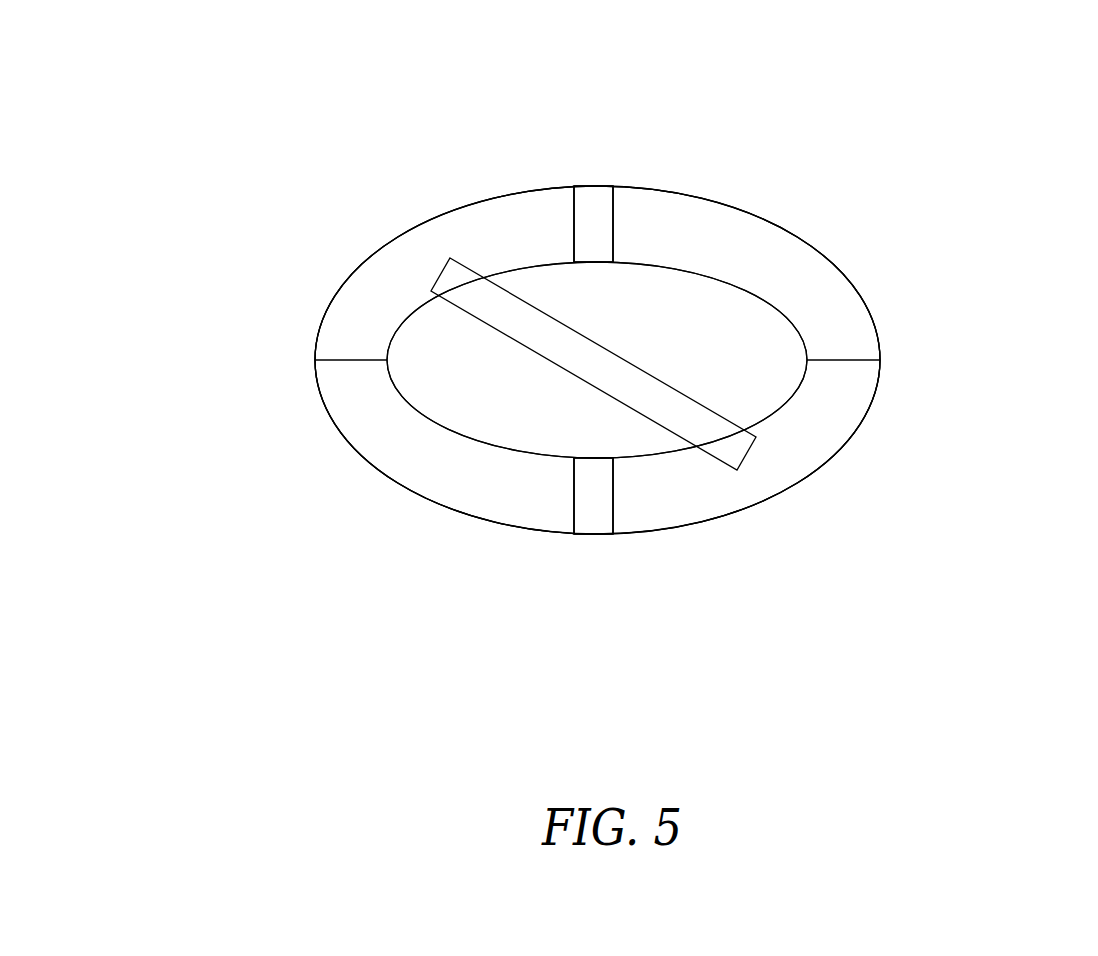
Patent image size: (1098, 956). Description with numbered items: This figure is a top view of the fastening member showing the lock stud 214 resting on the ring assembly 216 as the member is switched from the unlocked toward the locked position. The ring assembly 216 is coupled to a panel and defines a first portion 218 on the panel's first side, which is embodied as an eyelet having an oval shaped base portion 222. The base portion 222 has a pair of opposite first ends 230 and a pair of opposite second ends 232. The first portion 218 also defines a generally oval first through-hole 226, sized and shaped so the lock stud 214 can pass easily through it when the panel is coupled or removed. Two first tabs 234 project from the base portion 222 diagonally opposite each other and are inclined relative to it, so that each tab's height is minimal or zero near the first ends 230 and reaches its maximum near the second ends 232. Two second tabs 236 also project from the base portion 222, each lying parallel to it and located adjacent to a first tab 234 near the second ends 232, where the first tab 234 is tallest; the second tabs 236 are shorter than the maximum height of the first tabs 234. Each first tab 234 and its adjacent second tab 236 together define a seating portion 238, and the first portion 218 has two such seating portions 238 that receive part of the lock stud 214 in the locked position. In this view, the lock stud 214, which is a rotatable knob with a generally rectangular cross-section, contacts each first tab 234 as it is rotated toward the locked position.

The lock stud 214 is at (467, 293).
The ring assembly 216 is at (840, 150).
The first portion 218 is at (290, 315).
The base portion 222 is at (398, 455).
The first through-hole 226 is at (745, 329).
The first ends 230 is at (275, 360).
The second ends 232 is at (577, 165).
The first tabs 234 is at (367, 287).
The second tabs 236 is at (600, 210).
The seating portion 238 is at (608, 183).